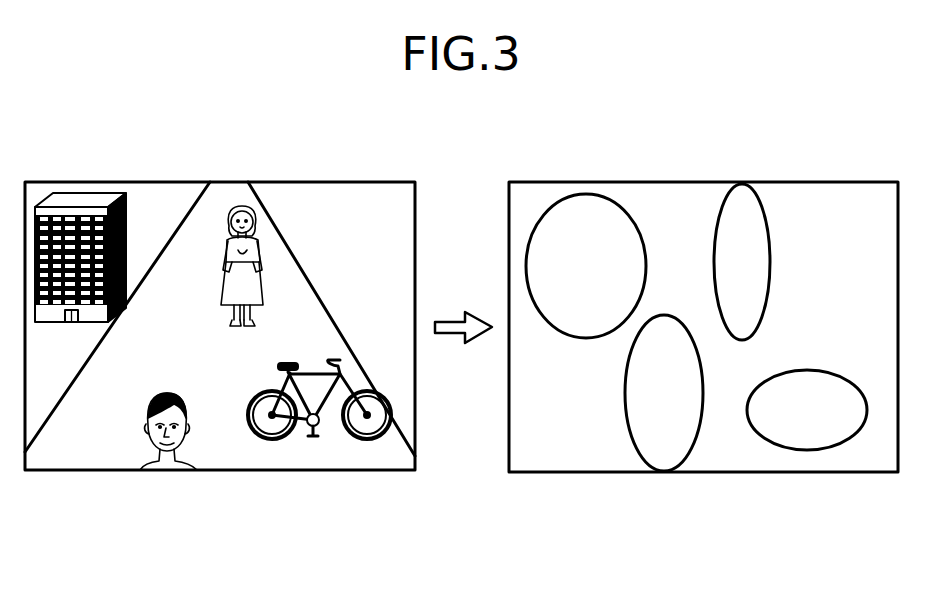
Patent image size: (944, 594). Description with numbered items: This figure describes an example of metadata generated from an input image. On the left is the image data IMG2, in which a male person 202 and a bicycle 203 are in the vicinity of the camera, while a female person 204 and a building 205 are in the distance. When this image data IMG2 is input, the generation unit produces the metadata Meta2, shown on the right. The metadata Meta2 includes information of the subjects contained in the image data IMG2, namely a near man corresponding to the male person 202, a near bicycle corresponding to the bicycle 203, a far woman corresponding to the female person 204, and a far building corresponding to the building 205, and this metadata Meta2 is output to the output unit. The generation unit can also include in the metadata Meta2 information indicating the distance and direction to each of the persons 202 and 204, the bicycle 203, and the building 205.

The male person 202 is at (138, 470).
The bicycle 203 is at (360, 443).
The female person 204 is at (256, 222).
The building 205 is at (82, 193).
The image data IMG2 is at (165, 182).
The metadata Meta2 is at (805, 182).